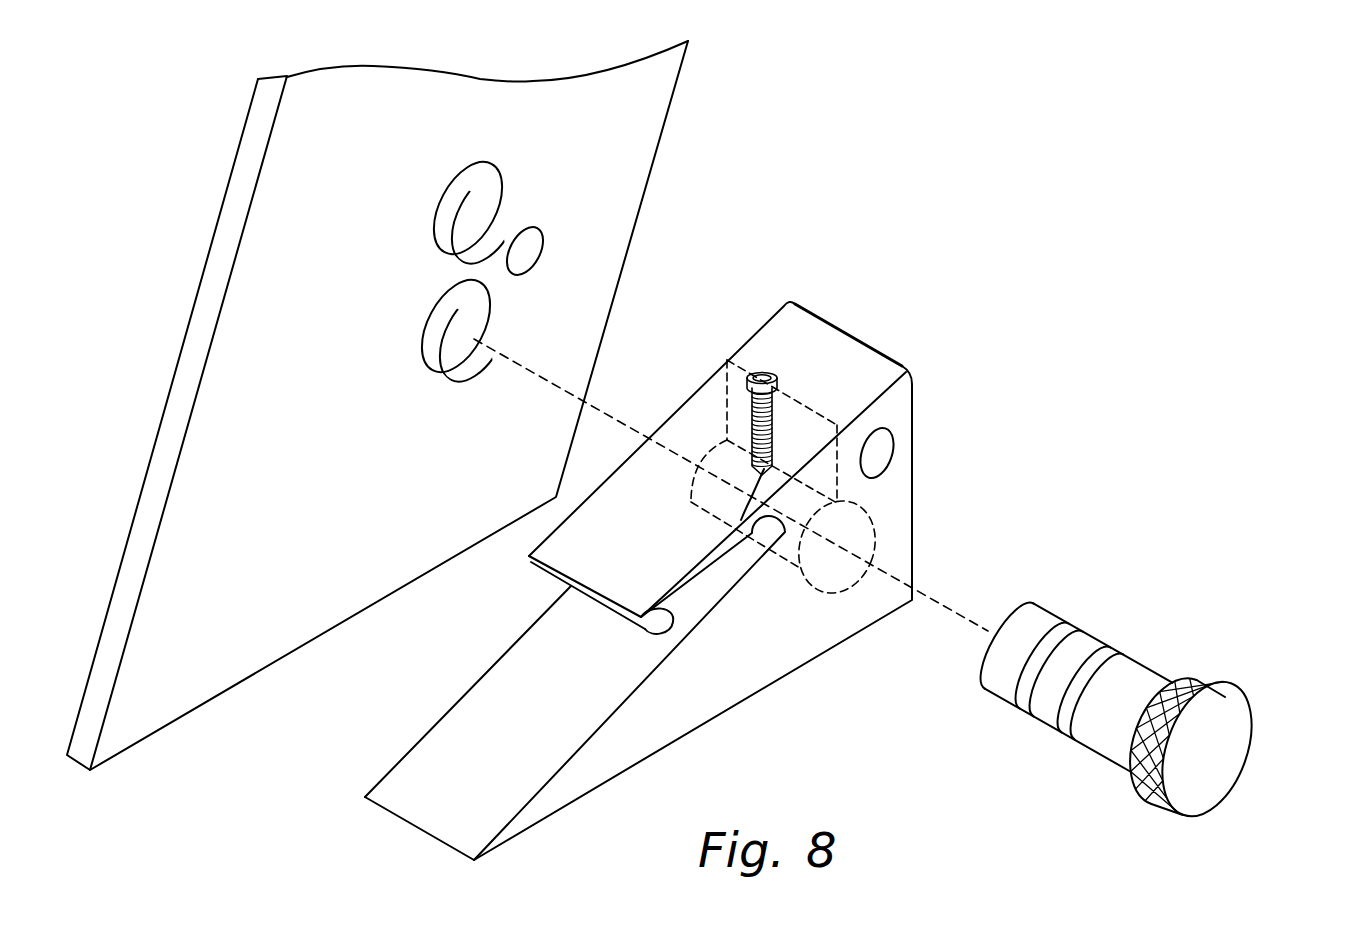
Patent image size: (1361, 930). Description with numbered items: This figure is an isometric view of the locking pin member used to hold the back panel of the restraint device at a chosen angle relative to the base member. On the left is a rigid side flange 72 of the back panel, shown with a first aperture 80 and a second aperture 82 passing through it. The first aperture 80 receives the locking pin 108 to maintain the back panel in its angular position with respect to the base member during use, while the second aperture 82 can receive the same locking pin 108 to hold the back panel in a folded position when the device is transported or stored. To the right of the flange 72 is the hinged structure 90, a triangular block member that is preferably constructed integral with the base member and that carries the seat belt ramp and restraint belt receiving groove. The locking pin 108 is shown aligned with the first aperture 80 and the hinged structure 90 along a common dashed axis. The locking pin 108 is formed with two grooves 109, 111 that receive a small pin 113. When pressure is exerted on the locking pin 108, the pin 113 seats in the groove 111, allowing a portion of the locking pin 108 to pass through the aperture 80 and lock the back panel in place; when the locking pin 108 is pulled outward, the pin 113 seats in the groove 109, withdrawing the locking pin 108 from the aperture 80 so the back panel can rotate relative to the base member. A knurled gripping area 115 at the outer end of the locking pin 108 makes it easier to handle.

The side flange 72 is at (308, 590).
The first aperture 80 is at (436, 303).
The second aperture 82 is at (448, 183).
The hinged structure 90 is at (915, 491).
The locking pin 108 is at (1155, 647).
The groove 109 is at (1052, 623).
The groove 111 is at (1093, 653).
The pin 113 is at (773, 408).
The knurled gripping area 115 is at (1203, 687).